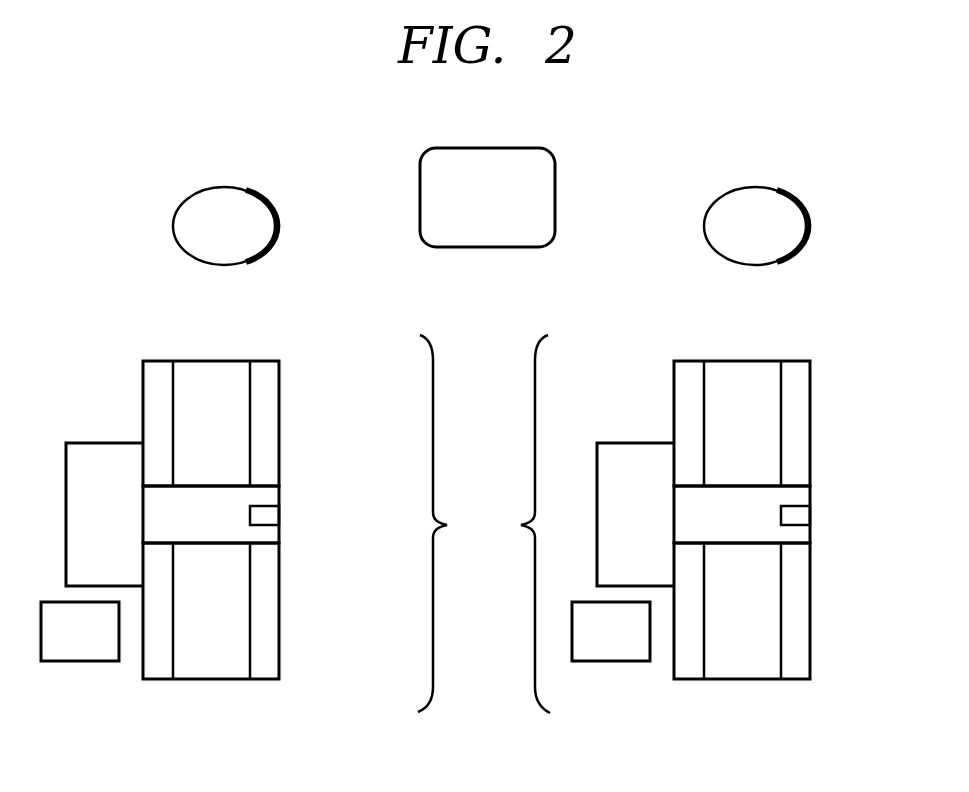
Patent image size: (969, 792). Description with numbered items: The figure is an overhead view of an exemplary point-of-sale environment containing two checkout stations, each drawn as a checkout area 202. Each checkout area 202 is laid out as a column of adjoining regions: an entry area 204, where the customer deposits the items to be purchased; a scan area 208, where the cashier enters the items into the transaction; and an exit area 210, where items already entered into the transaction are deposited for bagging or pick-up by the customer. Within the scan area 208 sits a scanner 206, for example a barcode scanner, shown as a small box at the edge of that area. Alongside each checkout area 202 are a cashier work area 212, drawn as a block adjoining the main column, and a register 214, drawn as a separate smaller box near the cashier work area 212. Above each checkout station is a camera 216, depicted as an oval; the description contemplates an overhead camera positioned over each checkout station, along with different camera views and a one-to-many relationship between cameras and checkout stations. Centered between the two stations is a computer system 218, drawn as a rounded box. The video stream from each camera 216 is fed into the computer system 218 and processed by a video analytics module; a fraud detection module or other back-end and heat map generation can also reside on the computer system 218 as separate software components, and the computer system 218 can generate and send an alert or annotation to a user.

The checkout area 202 is at (484, 524).
The entry area 204 is at (187, 623).
The scanner 206 is at (272, 520).
The scan area 208 is at (173, 532).
The exit area 210 is at (189, 440).
The cashier work area 212 is at (81, 531).
The register 214 is at (55, 647).
The camera 216 is at (198, 243).
The computer system 218 is at (463, 213).